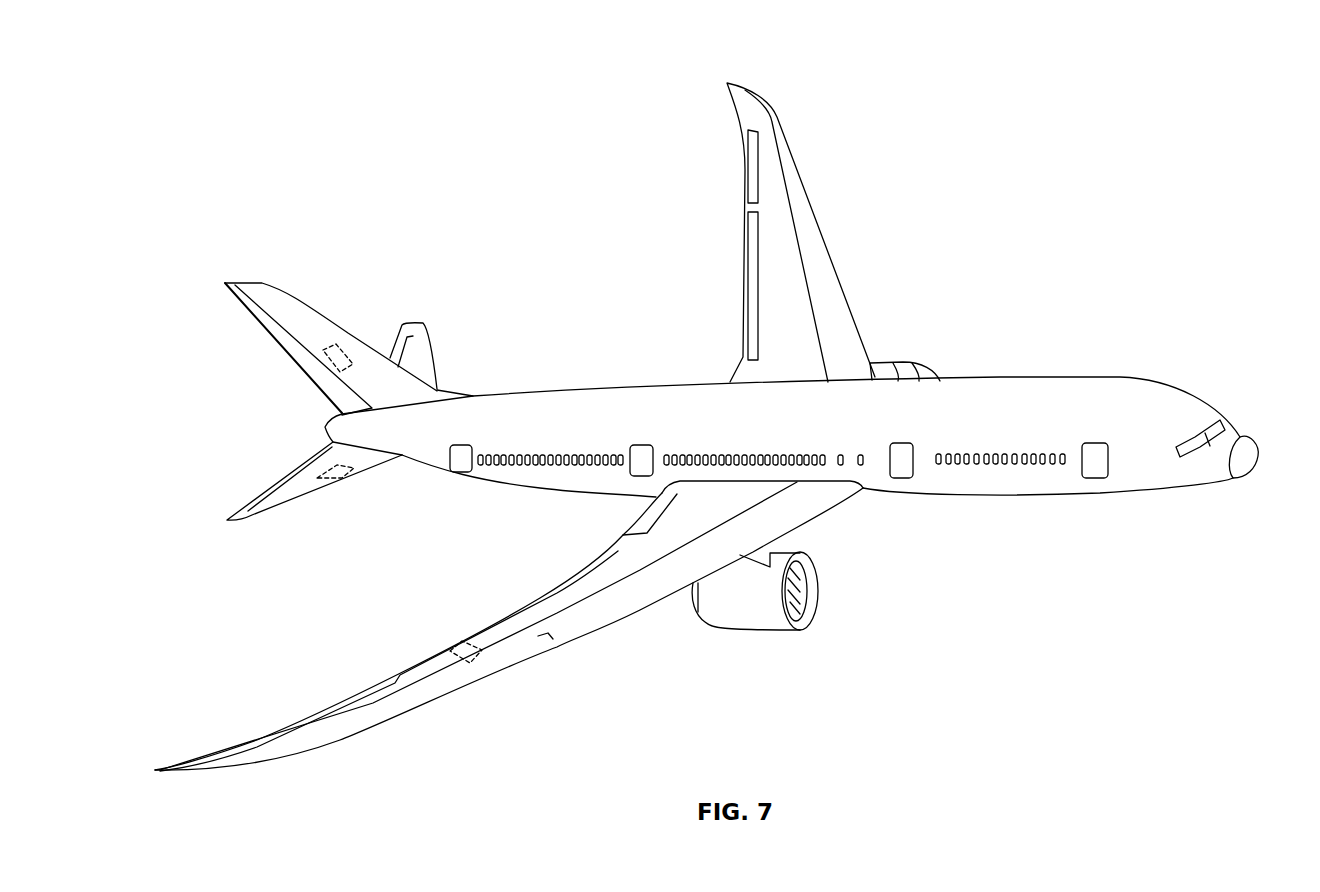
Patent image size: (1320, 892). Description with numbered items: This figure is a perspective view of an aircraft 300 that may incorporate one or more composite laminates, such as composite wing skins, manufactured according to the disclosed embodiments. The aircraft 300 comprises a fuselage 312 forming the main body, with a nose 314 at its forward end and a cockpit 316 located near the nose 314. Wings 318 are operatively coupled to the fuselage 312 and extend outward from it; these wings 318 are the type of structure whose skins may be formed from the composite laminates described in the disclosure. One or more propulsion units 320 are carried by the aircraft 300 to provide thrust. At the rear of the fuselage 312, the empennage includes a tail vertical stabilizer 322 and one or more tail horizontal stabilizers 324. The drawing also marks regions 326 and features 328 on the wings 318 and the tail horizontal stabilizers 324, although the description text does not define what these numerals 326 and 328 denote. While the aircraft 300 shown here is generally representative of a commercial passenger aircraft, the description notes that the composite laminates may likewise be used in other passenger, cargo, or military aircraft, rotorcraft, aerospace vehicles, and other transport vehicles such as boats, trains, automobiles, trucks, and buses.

The aircraft 300 is at (1032, 190).
The fuselage 312 is at (1000, 390).
The nose 314 is at (1238, 465).
The cockpit 316 is at (1220, 418).
The wings 318 is at (787, 162).
The propulsion units 320 is at (913, 363).
The tail vertical stabilizer 322 is at (288, 312).
The tail horizontal stabilizers 324 is at (423, 355).
The monitored region 326 is at (360, 347).
The sensor 328 is at (338, 342).